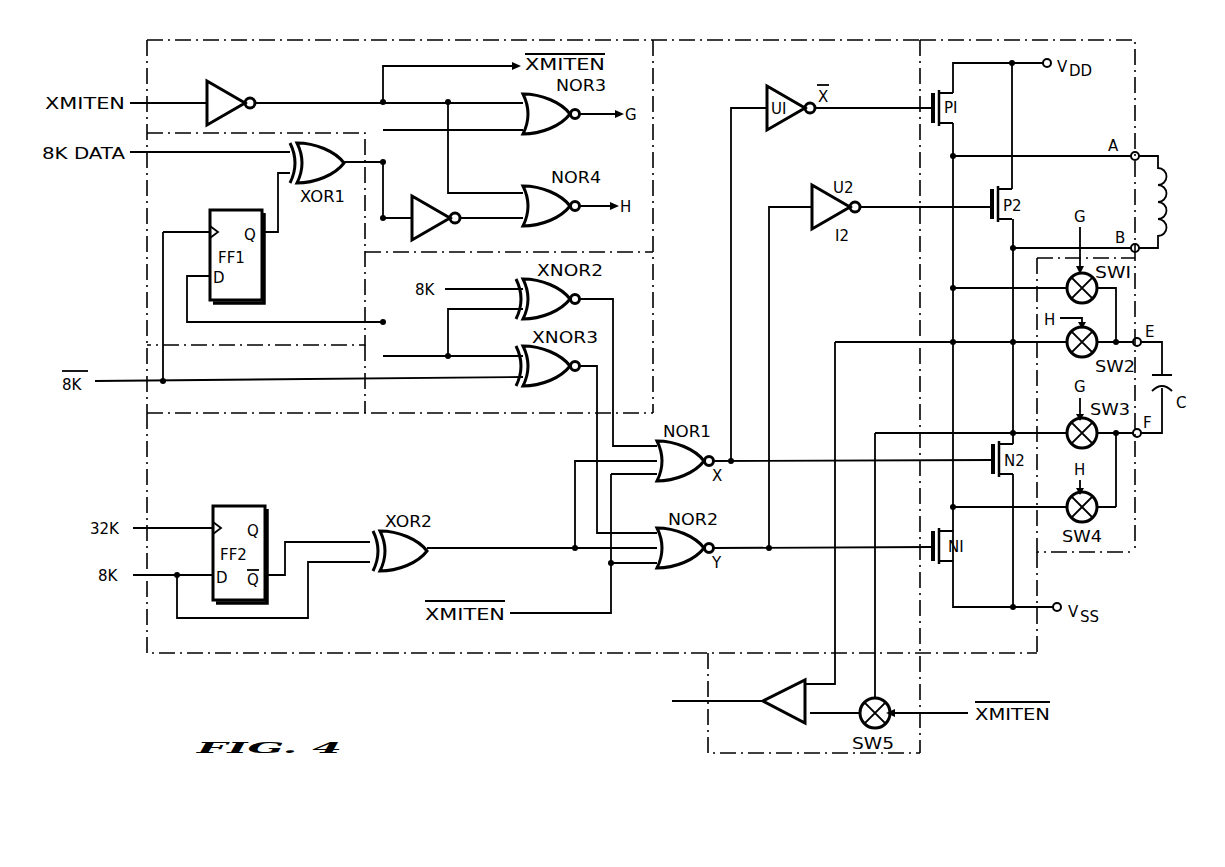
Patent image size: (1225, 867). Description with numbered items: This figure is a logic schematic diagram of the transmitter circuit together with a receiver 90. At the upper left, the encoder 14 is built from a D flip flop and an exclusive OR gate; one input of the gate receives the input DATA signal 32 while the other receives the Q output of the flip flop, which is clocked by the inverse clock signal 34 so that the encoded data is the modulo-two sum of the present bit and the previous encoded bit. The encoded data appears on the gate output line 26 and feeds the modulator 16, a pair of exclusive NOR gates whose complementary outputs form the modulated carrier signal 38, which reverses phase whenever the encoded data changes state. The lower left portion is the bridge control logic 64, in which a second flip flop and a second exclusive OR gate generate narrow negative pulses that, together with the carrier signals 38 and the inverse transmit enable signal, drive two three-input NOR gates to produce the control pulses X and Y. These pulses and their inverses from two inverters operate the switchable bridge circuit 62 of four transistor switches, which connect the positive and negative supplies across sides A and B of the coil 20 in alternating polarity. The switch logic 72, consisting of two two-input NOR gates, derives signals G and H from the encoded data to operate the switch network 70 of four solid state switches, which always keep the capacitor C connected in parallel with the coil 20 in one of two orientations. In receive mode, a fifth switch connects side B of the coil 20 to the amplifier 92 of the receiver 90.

The switch logic 72 is at (147, 56).
The encoder 14 is at (147, 236).
The input DATA signal 32 is at (175, 153).
The inverse clock signal 34 is at (131, 368).
The exclusive-OR output line 26 is at (384, 186).
The modulator 16 is at (365, 392).
The modulated carrier signal 38 is at (622, 410).
The bridge control logic 64 is at (147, 464).
The switchable bridge circuit 62 is at (1157, 70).
The coil 20 is at (1167, 176).
The switch network 70 is at (1108, 553).
The receiver 90 is at (707, 725).
The amplifier 92 is at (782, 681).